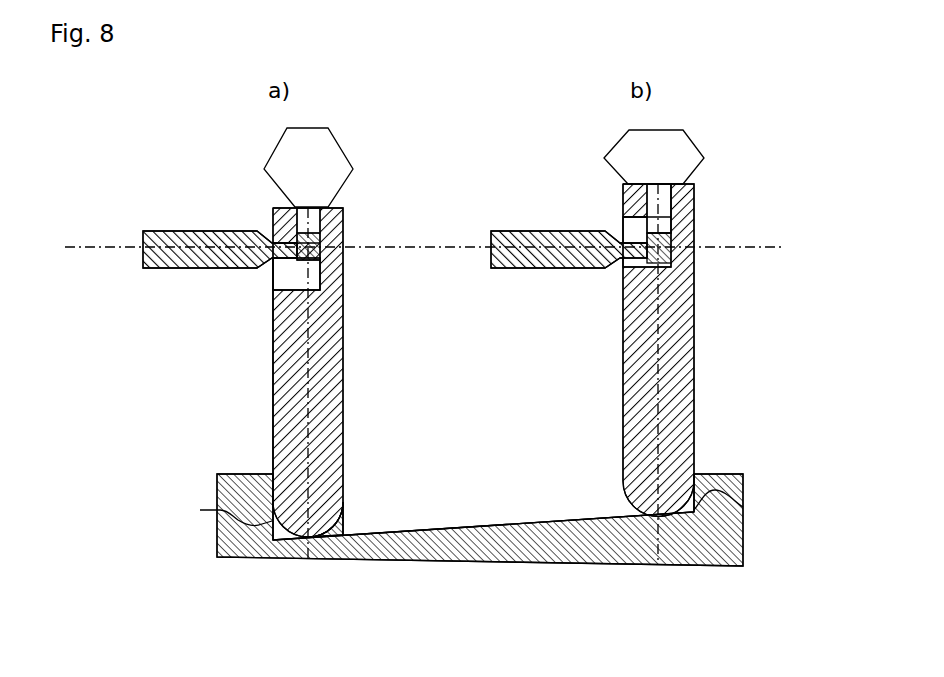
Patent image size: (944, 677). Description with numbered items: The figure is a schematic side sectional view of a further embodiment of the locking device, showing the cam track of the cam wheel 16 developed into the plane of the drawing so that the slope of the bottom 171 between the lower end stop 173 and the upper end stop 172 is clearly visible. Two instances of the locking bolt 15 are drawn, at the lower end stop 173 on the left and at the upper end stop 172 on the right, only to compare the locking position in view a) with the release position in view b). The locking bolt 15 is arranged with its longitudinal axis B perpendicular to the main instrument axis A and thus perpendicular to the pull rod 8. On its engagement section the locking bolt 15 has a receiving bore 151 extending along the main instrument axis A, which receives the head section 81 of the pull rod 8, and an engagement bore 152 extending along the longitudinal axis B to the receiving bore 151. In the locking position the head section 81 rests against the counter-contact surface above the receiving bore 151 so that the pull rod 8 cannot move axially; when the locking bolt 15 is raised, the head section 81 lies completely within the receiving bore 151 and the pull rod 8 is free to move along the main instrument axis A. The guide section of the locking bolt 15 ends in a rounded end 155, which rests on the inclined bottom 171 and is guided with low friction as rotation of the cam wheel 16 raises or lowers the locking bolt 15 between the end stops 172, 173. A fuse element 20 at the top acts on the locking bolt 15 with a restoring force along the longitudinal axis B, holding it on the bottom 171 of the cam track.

The pull rod 8 is at (165, 227).
The head section 81 is at (321, 257).
The fuse element 20 is at (333, 155).
The locking bolt 15 is at (345, 385).
The receiving bore 151 is at (287, 265).
The engagement bore 152 is at (317, 220).
The rounded end 155 is at (343, 514).
The cam wheel 16 is at (222, 472).
The bottom 171 is at (481, 527).
The upper end stop 172 is at (743, 507).
The lower end stop 173 is at (216, 511).
The main instrument axis A is at (105, 252).
The longitudinal axis B is at (300, 344).